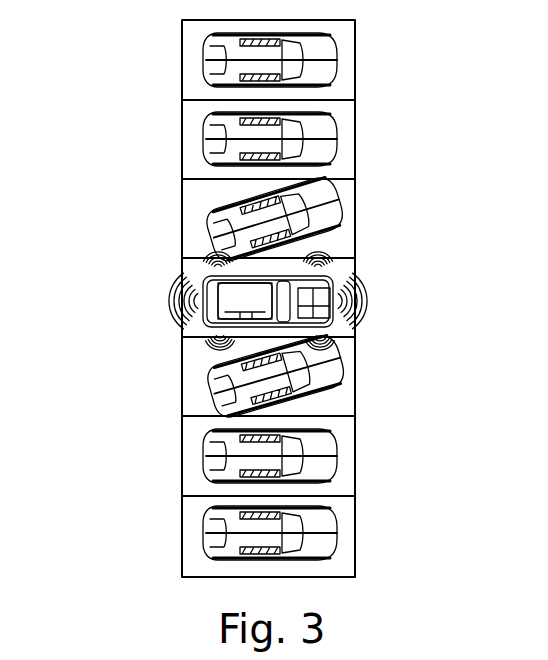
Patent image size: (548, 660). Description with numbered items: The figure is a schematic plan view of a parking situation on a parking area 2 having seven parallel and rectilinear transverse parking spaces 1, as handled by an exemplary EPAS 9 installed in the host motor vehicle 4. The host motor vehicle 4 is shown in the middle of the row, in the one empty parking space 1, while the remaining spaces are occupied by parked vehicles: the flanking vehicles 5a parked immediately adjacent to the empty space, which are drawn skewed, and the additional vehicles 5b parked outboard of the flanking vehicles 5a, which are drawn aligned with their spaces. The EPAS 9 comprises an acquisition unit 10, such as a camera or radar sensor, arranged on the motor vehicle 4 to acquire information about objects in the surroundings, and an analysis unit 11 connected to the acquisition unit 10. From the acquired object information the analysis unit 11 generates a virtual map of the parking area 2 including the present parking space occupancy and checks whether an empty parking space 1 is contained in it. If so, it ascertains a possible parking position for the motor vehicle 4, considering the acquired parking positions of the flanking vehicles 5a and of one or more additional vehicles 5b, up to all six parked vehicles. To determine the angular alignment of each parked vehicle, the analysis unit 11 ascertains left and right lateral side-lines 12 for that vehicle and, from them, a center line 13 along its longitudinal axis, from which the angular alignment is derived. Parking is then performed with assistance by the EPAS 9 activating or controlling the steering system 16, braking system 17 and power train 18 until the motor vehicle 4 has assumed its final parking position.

The parking space 1 is at (342, 50).
The parking area 2 is at (357, 153).
The host motor vehicle 4 is at (188, 287).
The flanking vehicle 5a is at (216, 232).
The additional vehicle 5b is at (336, 122).
The EPAS 9 is at (352, 304).
The acquisition unit 10 is at (336, 283).
The analysis unit 11 is at (272, 306).
The lateral side-line 12 is at (212, 350).
The center line 13 is at (215, 411).
The steering system 16 is at (350, 334).
The braking system 17 is at (330, 343).
The power train 18 is at (320, 346).